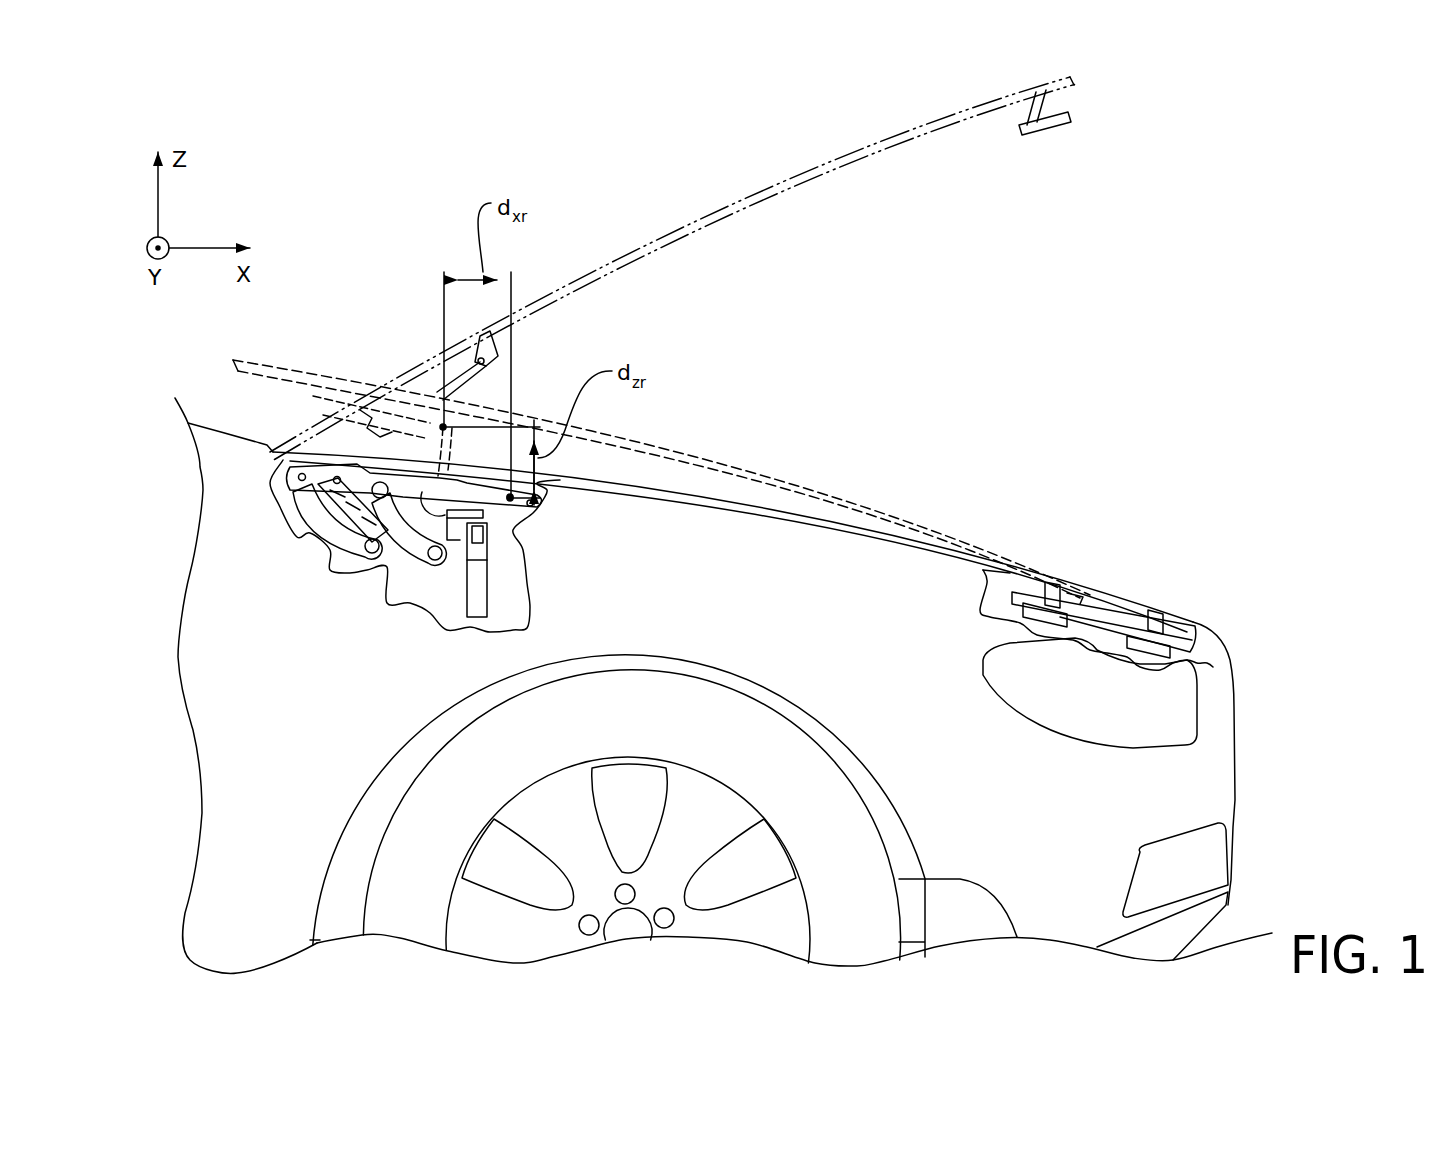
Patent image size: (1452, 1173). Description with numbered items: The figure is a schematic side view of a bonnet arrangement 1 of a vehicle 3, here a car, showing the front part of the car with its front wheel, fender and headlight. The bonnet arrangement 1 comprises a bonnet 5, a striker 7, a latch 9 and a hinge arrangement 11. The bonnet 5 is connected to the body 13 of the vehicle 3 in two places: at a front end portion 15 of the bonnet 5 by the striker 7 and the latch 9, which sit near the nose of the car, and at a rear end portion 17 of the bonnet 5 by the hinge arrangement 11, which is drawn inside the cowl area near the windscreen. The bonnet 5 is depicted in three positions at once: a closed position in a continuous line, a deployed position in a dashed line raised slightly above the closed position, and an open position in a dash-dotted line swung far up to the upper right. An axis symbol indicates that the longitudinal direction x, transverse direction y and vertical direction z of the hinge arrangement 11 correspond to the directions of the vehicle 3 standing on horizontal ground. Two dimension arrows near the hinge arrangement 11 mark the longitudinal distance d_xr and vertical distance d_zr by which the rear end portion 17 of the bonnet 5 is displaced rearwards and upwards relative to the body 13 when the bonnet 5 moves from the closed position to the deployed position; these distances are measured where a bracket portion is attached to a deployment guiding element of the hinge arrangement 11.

The bonnet arrangement 1 is at (1114, 383).
The vehicle 3 is at (1042, 308).
The bonnet 5 is at (795, 188).
The striker 7 is at (1077, 580).
The latch 9 is at (1120, 597).
The hinge arrangement 11 is at (566, 521).
The body 13 is at (1217, 662).
The front end portion 15 is at (1214, 604).
The rear end portion 17 is at (550, 212).